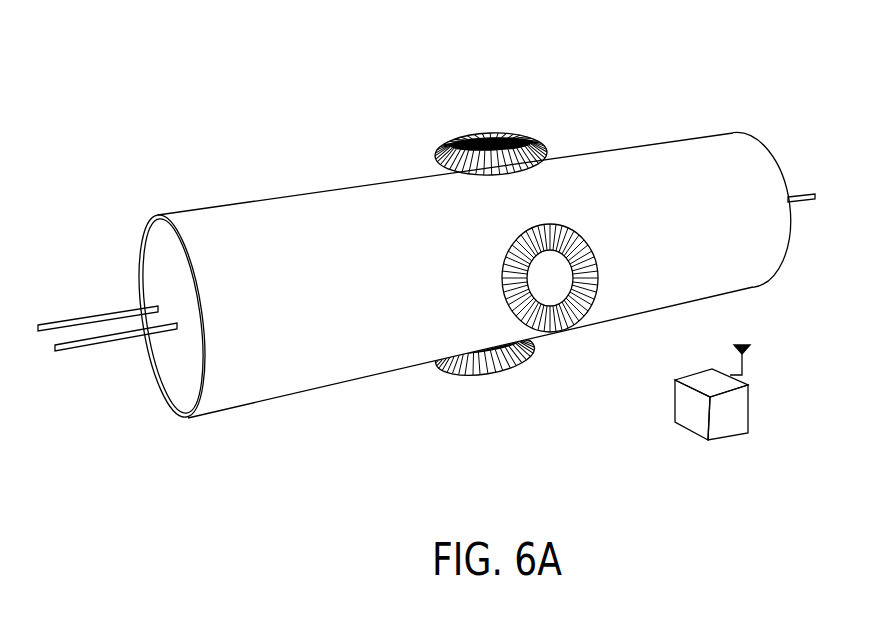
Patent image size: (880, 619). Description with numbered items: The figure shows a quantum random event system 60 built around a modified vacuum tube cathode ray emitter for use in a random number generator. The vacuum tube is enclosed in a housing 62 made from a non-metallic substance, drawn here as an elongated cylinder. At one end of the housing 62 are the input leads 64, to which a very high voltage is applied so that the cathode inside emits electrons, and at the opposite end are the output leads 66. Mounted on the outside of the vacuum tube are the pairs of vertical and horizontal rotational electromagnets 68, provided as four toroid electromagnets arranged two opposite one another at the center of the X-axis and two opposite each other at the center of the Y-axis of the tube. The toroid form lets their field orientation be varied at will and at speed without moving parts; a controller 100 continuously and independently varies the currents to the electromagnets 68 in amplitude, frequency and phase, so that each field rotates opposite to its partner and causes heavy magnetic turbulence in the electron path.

The quantum random event system 60 is at (222, 102).
The housing 62 is at (315, 205).
The input leads 64 is at (100, 295).
The output leads 66 is at (795, 180).
The vertical and horizontal rotational electromagnets 68 is at (516, 130).
The controller 100 is at (733, 412).